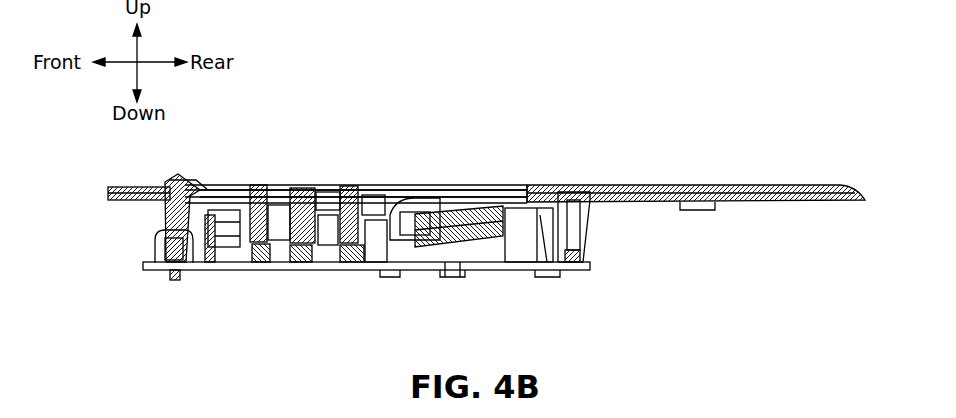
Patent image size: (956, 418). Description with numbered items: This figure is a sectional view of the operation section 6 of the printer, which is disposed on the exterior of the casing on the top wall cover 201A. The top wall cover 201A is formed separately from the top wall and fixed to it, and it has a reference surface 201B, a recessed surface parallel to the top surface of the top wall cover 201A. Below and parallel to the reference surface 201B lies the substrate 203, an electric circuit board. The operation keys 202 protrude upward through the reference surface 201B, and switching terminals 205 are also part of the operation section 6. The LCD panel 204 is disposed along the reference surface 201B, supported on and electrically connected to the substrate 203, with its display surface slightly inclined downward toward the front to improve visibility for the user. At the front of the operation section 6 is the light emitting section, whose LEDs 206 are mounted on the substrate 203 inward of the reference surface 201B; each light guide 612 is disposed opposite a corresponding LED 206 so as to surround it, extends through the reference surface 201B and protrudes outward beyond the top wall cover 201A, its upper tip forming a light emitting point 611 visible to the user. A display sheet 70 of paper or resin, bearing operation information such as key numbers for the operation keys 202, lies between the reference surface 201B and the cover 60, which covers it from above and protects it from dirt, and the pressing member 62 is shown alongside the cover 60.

The operation section 6 is at (606, 120).
The cover 60 is at (452, 185).
The pressing member 62 is at (185, 177).
The display sheet 70 is at (510, 190).
The top wall cover 201A is at (675, 185).
The reference surface 201B is at (385, 190).
The operation keys 202 is at (350, 185).
The substrate 203 is at (545, 272).
The LCD panel 204 is at (462, 270).
The switching terminals 205 is at (348, 270).
The LEDs 206 is at (180, 270).
The light emitting point 611 is at (172, 178).
The light guide 612 is at (165, 215).